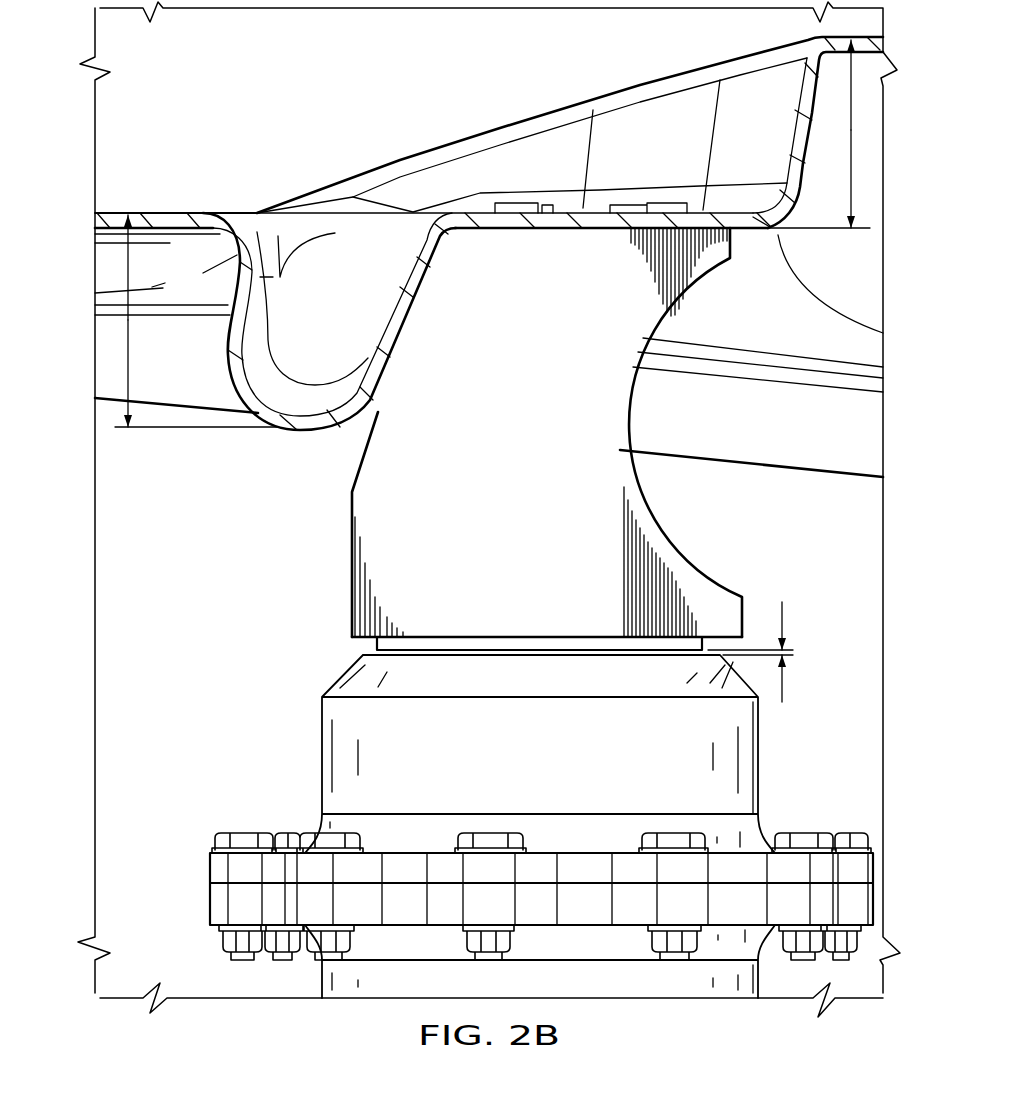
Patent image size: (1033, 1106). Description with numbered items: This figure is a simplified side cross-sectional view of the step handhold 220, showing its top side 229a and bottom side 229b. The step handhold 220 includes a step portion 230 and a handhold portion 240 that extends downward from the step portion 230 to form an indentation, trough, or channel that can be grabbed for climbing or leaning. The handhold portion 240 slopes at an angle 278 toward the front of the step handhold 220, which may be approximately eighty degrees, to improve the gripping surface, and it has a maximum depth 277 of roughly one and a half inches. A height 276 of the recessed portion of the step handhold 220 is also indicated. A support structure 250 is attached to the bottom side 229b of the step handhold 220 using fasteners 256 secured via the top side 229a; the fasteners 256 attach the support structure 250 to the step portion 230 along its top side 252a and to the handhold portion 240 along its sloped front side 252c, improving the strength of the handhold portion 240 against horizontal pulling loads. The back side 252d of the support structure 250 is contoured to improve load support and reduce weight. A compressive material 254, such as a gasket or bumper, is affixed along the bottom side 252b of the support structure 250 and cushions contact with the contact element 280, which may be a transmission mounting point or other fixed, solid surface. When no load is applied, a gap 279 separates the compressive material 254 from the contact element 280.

The step handhold 220 is at (435, 107).
The step portion 230 is at (565, 170).
The handhold portion 240 is at (325, 257).
The support structure 250 is at (572, 436).
The top side 252a is at (562, 228).
The bottom side 252b is at (524, 637).
The front side 252c is at (358, 468).
The back side 252d is at (628, 480).
The compressive material 254 is at (440, 647).
The fasteners 256 is at (664, 202).
The top side 229a is at (742, 208).
The bottom side 229b is at (755, 232).
The height 276 is at (853, 133).
The depth 277 is at (126, 323).
The angle 278 is at (173, 235).
The gap 279 is at (786, 615).
The contact element 280 is at (760, 757).